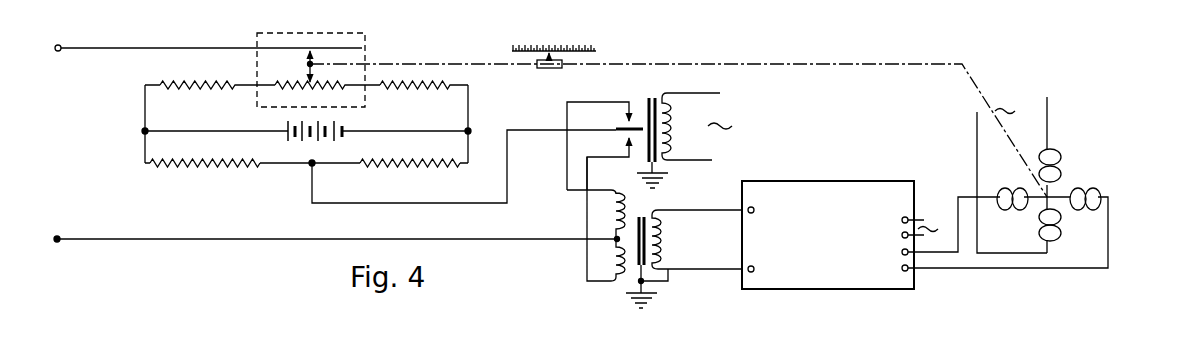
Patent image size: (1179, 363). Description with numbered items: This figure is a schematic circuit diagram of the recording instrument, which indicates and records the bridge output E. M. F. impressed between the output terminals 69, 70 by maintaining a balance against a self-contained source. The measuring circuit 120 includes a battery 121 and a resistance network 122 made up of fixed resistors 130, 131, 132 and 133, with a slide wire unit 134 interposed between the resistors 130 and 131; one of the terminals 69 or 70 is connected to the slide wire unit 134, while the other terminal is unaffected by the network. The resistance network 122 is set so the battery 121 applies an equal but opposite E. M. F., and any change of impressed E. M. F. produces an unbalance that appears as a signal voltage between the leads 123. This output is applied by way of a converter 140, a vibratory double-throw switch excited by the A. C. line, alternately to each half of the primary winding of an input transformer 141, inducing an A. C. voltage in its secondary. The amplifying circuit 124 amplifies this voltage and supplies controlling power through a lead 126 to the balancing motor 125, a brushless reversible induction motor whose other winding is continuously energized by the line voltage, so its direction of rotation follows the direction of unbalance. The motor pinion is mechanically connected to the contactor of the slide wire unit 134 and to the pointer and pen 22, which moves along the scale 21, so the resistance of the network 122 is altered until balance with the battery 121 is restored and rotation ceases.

The output terminal 70 is at (61, 47).
The output terminal 69 is at (61, 243).
The resistance network 122 is at (141, 131).
The measuring circuit 120 is at (199, 179).
The fixed resistor 130 is at (203, 83).
The fixed resistor 131 is at (404, 89).
The slide wire unit 134 is at (274, 87).
The battery 121 is at (349, 134).
The fixed resistor 132 is at (228, 167).
The fixed resistor 133 is at (395, 168).
The leads 123 is at (497, 206).
The scale 21 is at (564, 51).
The pointer and pen 22 is at (551, 70).
The converter 140 is at (633, 98).
The input transformer 141 is at (618, 288).
The amplifying circuit 124 is at (839, 291).
The lead 126 is at (948, 270).
The balancing motor 125 is at (1082, 158).